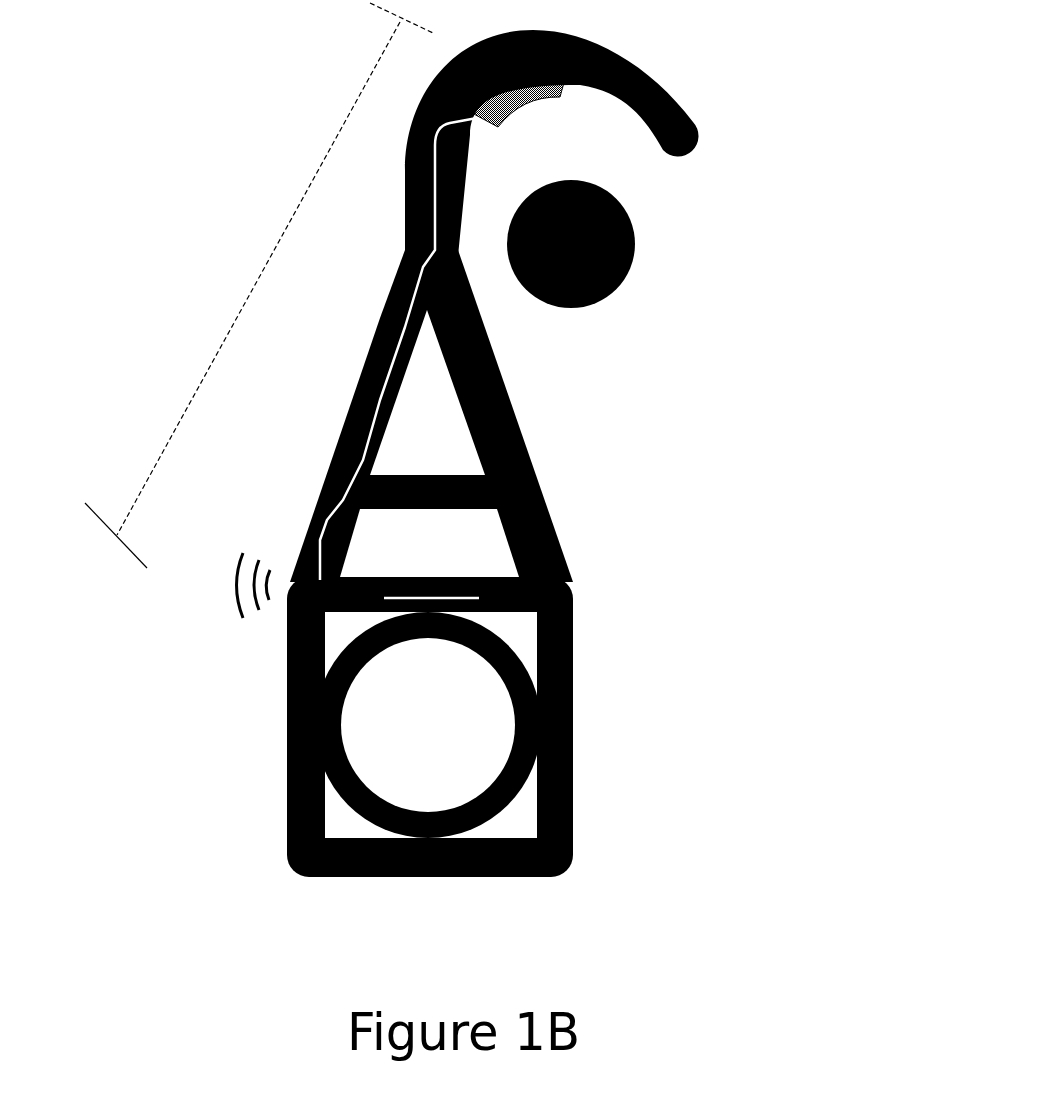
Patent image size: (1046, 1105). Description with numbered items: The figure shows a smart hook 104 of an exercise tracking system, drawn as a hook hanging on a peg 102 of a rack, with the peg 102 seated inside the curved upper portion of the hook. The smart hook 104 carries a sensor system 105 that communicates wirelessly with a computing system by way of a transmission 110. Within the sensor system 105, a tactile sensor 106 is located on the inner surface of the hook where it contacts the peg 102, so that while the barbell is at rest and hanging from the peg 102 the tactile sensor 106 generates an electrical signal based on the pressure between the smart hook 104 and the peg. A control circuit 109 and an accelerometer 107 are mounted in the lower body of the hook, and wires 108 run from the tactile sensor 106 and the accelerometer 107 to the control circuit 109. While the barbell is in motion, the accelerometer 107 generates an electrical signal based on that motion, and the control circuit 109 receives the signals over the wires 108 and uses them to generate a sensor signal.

The peg 102 is at (633, 265).
The smart hook 104 is at (570, 930).
The sensor system 105 is at (273, 238).
The tactile sensor 106 is at (540, 119).
The accelerometer 107 is at (518, 597).
The wire 108 is at (433, 687).
The control circuit 109 is at (345, 597).
The transmission 110 is at (218, 588).